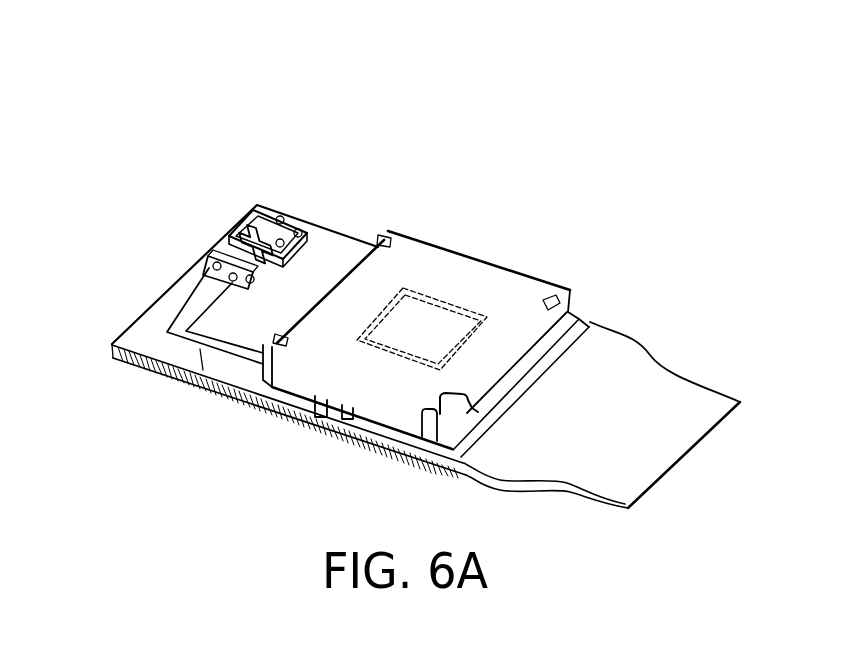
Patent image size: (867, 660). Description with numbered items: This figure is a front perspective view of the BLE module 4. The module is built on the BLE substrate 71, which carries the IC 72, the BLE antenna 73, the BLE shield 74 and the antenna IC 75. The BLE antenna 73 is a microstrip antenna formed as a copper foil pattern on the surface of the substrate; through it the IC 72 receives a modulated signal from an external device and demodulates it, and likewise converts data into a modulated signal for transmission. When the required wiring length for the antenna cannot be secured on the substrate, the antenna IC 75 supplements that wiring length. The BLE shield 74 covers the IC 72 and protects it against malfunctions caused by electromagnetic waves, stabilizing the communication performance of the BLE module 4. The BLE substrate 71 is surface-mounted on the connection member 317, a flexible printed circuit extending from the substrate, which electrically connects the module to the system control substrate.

The BLE module 4 is at (358, 108).
The BLE substrate 71 is at (327, 242).
The IC 72 is at (332, 413).
The BLE antenna 73 is at (193, 386).
The BLE shield 74 is at (420, 267).
The antenna IC 75 is at (224, 238).
The connection member 317 is at (613, 390).